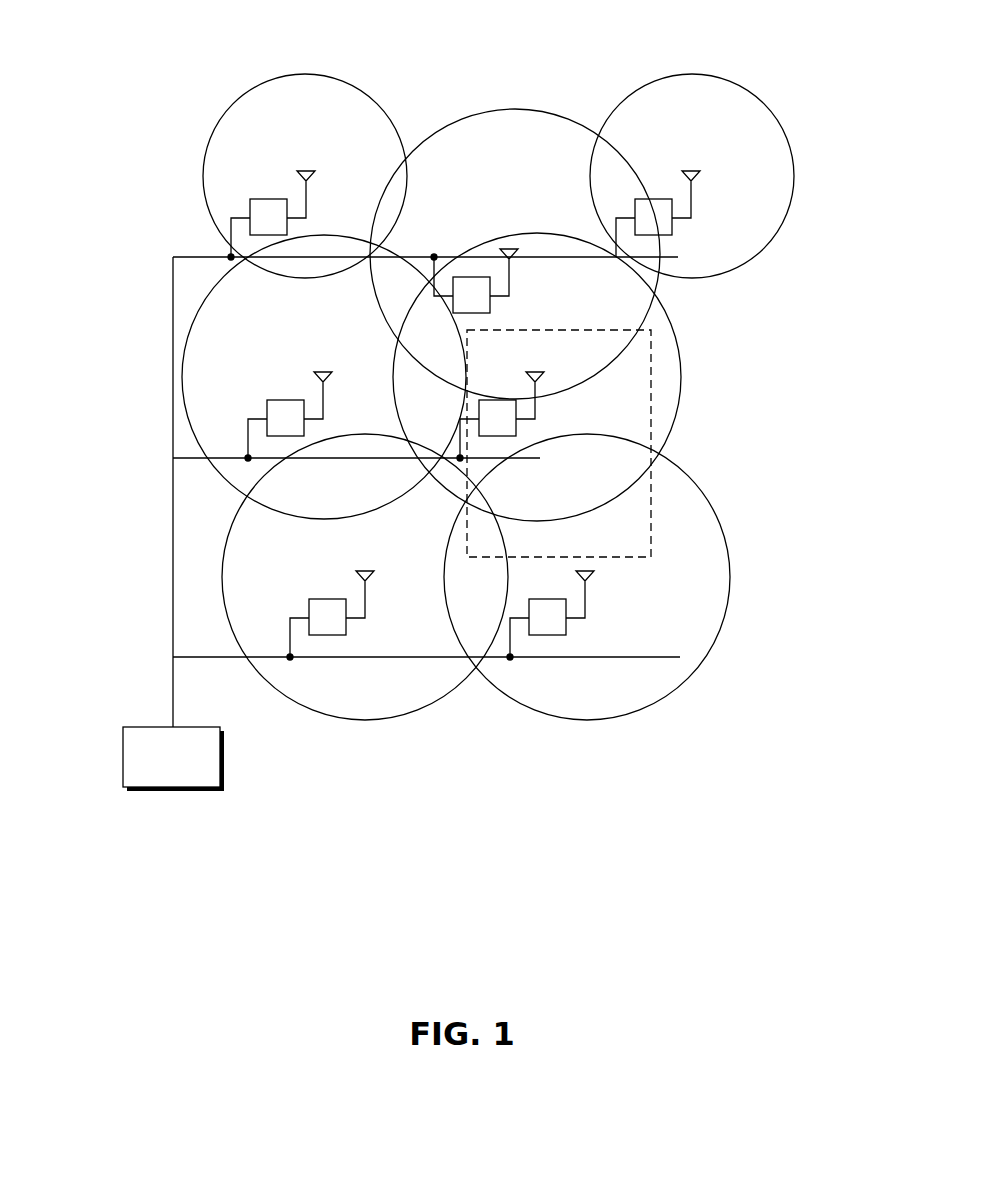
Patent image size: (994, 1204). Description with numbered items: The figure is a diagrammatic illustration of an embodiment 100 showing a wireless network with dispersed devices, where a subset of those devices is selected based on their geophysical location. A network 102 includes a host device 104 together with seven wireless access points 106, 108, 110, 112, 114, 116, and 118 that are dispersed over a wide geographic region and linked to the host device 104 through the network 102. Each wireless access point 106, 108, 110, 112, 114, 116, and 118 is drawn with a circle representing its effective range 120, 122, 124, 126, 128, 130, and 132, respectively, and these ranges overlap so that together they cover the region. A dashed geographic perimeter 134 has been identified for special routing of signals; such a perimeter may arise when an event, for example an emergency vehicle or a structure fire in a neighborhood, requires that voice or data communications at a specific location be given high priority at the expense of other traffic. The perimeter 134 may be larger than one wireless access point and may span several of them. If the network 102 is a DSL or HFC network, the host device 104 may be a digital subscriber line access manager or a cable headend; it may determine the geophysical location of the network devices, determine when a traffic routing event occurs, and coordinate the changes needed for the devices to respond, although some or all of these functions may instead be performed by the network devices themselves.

The embodiment showing a network with dispersed devices 100 is at (634, 845).
The network 102 is at (647, 657).
The host device 104 is at (165, 790).
The wireless access point 106 is at (347, 633).
The wireless access point 108 is at (563, 637).
The wireless access point 110 is at (267, 405).
The wireless access point 112 is at (517, 430).
The wireless access point 114 is at (278, 199).
The wireless access point 116 is at (470, 277).
The wireless access point 118 is at (673, 228).
The effective range 120 is at (331, 718).
The effective range 122 is at (718, 633).
The effective range 124 is at (185, 345).
The effective range 126 is at (673, 332).
The effective range 128 is at (280, 76).
The effective range 130 is at (543, 111).
The effective range 132 is at (757, 98).
The geographic perimeter 134 is at (651, 530).